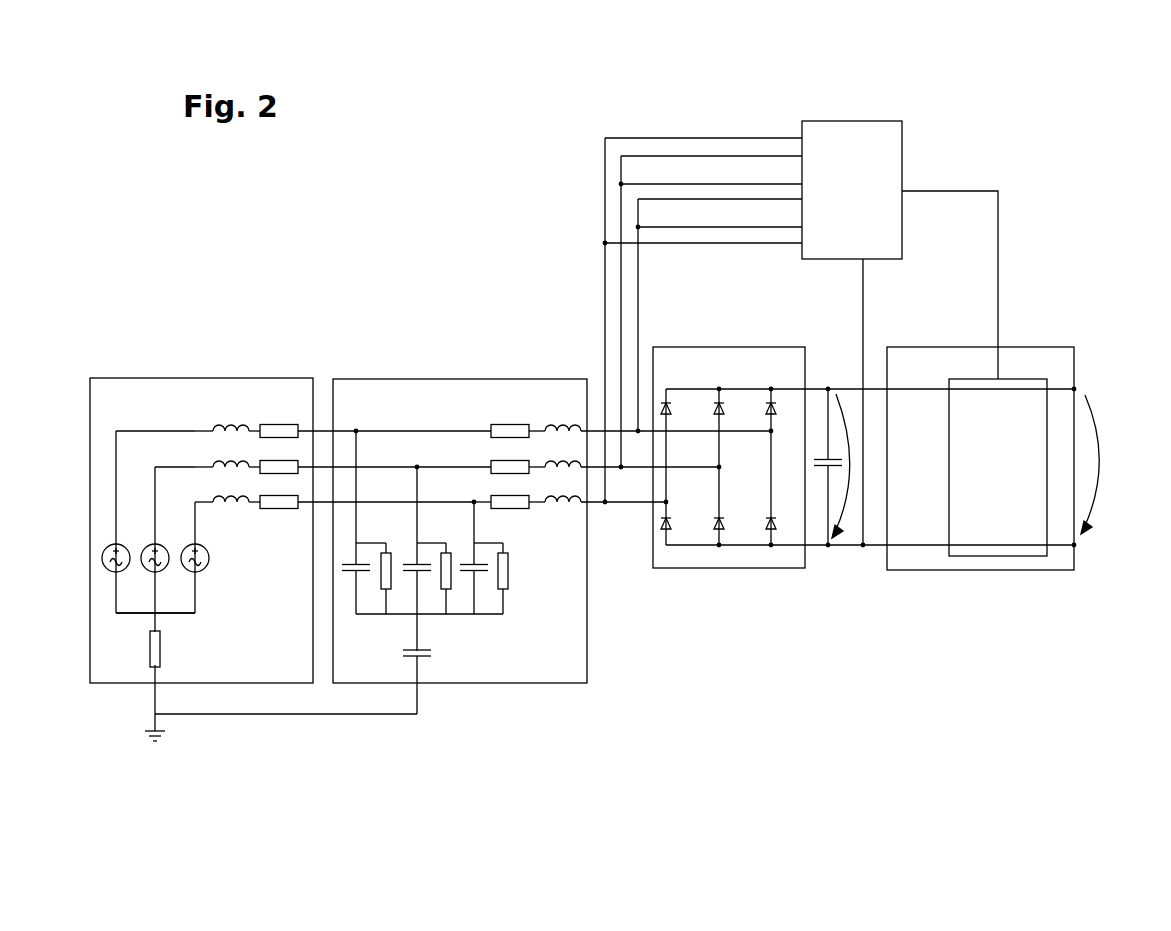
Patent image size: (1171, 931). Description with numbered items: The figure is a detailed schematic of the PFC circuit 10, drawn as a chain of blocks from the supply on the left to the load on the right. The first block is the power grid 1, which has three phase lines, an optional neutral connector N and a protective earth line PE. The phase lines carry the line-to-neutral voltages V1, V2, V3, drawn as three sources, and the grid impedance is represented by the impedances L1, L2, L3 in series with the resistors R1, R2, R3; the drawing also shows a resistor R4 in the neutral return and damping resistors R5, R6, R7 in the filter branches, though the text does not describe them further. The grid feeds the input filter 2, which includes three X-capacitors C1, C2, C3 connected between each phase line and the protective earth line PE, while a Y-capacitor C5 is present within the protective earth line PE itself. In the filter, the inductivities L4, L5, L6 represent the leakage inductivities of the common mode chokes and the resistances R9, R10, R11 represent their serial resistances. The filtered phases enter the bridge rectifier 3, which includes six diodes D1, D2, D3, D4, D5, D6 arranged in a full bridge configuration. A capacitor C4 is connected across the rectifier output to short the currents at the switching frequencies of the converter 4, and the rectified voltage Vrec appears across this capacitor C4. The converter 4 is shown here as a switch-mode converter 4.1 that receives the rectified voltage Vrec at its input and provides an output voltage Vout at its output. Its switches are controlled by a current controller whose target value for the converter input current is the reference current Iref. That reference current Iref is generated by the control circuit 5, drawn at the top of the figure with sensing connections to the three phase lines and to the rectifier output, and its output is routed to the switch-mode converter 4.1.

The PFC circuit 10 is at (323, 273).
The power grid 1 is at (282, 564).
The input filter 2 is at (552, 546).
The bridge rectifier 3 is at (863, 457).
The converter 4 is at (981, 458).
The switch-mode converter 4.1 is at (998, 467).
The control circuit 5 is at (852, 190).
The impedance L1 is at (224, 421).
The impedance L2 is at (224, 457).
The impedance L3 is at (224, 492).
The leakage inductivity L4 is at (658, 418).
The leakage inductivity L5 is at (632, 454).
The leakage inductivity L6 is at (605, 489).
The resistor R1 is at (308, 424).
The resistor R2 is at (338, 460).
The resistor R3 is at (367, 495).
The neutral resistor R4 is at (167, 649).
The damping resistor R5 is at (512, 575).
The damping resistor R6 is at (395, 575).
The damping resistor R7 is at (454, 575).
The serial resistance R9 is at (518, 423).
The serial resistance R10 is at (518, 459).
The serial resistance R11 is at (518, 494).
The X-capacitor C1 is at (359, 522).
The X-capacitor C2 is at (420, 559).
The X-capacitor C3 is at (477, 558).
The capacitor C4 is at (832, 467).
The Y-capacitor C5 is at (427, 681).
The line-to-neutral voltage V1 is at (119, 550).
The line-to-neutral voltage V2 is at (159, 550).
The line-to-neutral voltage V3 is at (199, 550).
The diode D1 is at (676, 411).
The diode D2 is at (729, 411).
The diode D3 is at (781, 411).
The diode D4 is at (781, 526).
The diode D5 is at (729, 526).
The diode D6 is at (676, 526).
The neutral connector N is at (158, 615).
The protective earth line PE is at (312, 715).
The reference current Iref is at (1003, 237).
The rectified voltage Vrec is at (848, 515).
The output voltage Vout is at (1114, 464).